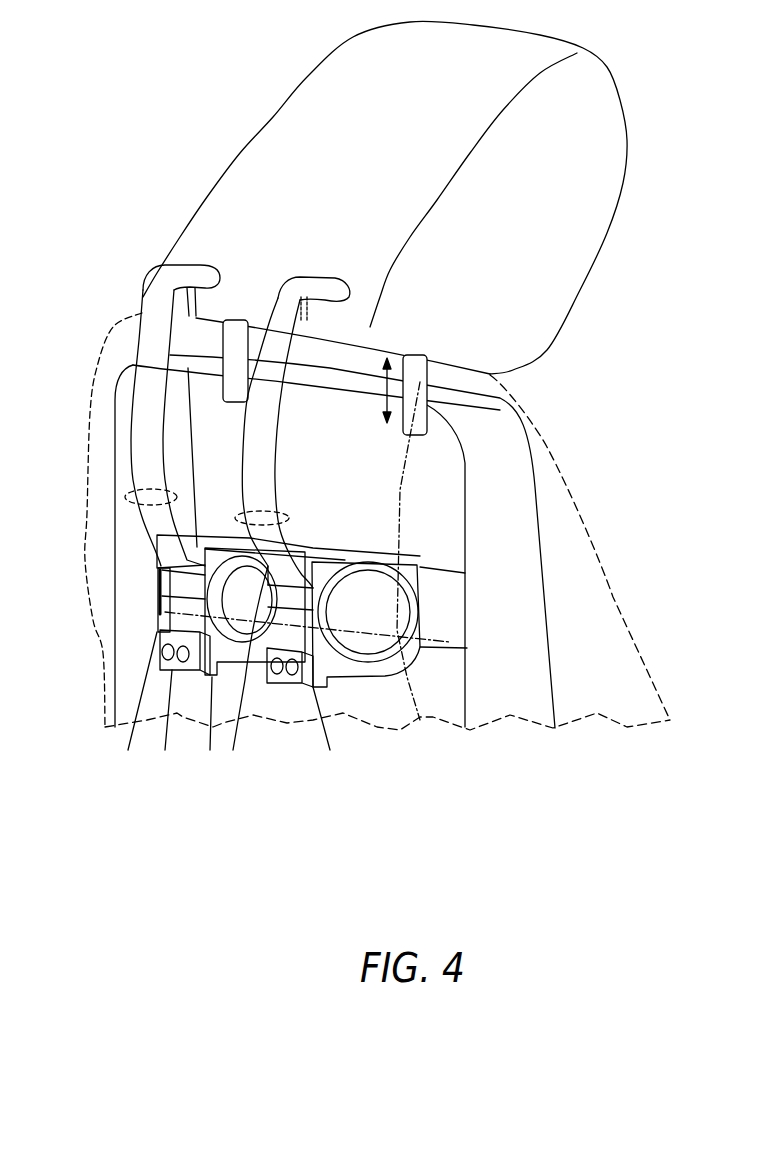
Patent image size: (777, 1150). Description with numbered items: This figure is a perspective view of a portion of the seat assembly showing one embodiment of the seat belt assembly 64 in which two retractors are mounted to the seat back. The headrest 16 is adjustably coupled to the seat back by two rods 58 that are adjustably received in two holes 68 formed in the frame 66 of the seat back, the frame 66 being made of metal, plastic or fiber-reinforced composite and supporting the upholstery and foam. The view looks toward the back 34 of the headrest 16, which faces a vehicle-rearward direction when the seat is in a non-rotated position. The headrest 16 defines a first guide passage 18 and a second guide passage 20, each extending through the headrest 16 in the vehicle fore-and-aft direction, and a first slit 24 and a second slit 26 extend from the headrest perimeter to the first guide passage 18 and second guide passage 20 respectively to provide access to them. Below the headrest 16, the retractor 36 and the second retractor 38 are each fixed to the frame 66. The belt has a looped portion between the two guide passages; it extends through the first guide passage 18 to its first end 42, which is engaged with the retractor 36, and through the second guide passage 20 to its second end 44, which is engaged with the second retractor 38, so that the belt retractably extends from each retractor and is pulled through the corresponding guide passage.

The headrest 16 is at (607, 63).
The first guide passage 18 is at (358, 291).
The second guide passage 20 is at (222, 270).
The first slit 24 is at (304, 300).
The second slit 26 is at (197, 308).
The back 34 is at (308, 90).
The retractor 36 is at (330, 750).
The second retractor 38 is at (165, 750).
The first end 42 is at (233, 740).
The second end 44 is at (128, 745).
The rods 58 is at (223, 338).
The seat belt assembly 64 is at (100, 248).
The frame 66 is at (527, 678).
The holes 68 is at (133, 365).